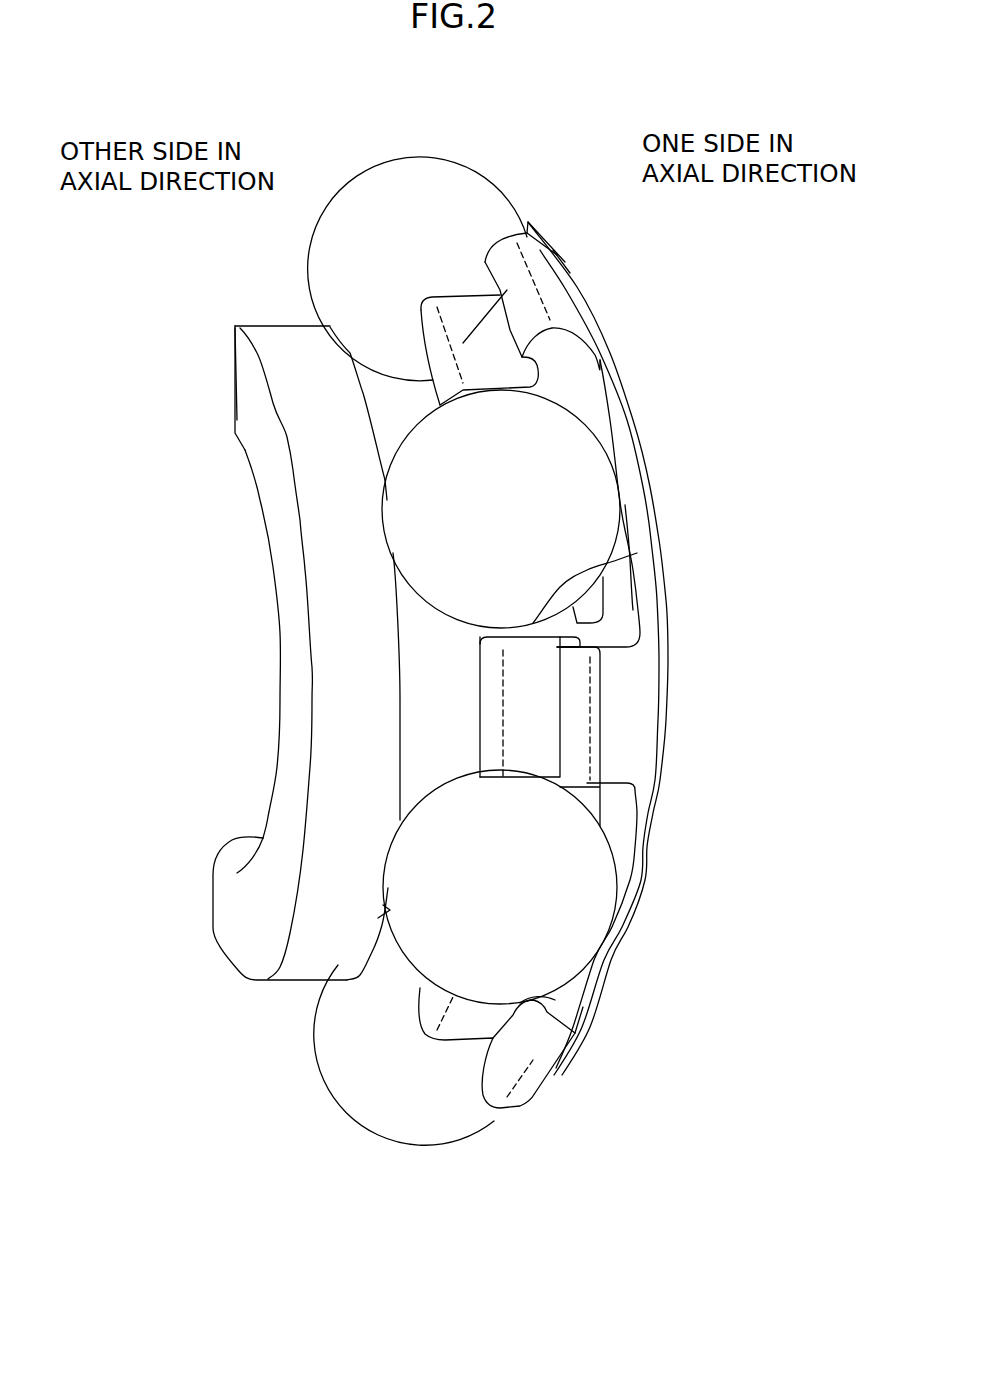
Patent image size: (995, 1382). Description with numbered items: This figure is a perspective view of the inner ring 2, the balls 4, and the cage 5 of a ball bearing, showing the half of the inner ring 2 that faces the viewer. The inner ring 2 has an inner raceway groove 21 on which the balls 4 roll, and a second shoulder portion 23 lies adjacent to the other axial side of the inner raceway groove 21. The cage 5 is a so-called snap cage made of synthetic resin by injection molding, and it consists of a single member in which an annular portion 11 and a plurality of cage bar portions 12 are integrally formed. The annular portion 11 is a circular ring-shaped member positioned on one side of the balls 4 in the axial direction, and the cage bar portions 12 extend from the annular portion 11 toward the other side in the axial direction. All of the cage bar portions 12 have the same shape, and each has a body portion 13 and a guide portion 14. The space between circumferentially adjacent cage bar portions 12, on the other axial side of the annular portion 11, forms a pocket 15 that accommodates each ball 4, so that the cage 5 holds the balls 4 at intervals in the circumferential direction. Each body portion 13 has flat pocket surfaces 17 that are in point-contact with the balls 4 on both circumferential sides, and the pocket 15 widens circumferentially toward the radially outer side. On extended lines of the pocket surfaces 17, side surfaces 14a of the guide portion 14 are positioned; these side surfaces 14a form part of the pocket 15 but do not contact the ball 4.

The inner ring 2 is at (287, 553).
The balls 4 is at (447, 208).
The cage 5 is at (681, 646).
The annular portion 11 is at (645, 832).
The cage bar portions 12 is at (675, 238).
The body portion 13 is at (505, 294).
The guide portion 14 is at (555, 297).
The side surfaces 14a is at (543, 343).
The pocket 15 is at (360, 262).
The pocket surfaces 17 is at (467, 397).
The inner raceway groove 21 is at (435, 692).
The second shoulder portion 23 is at (308, 435).